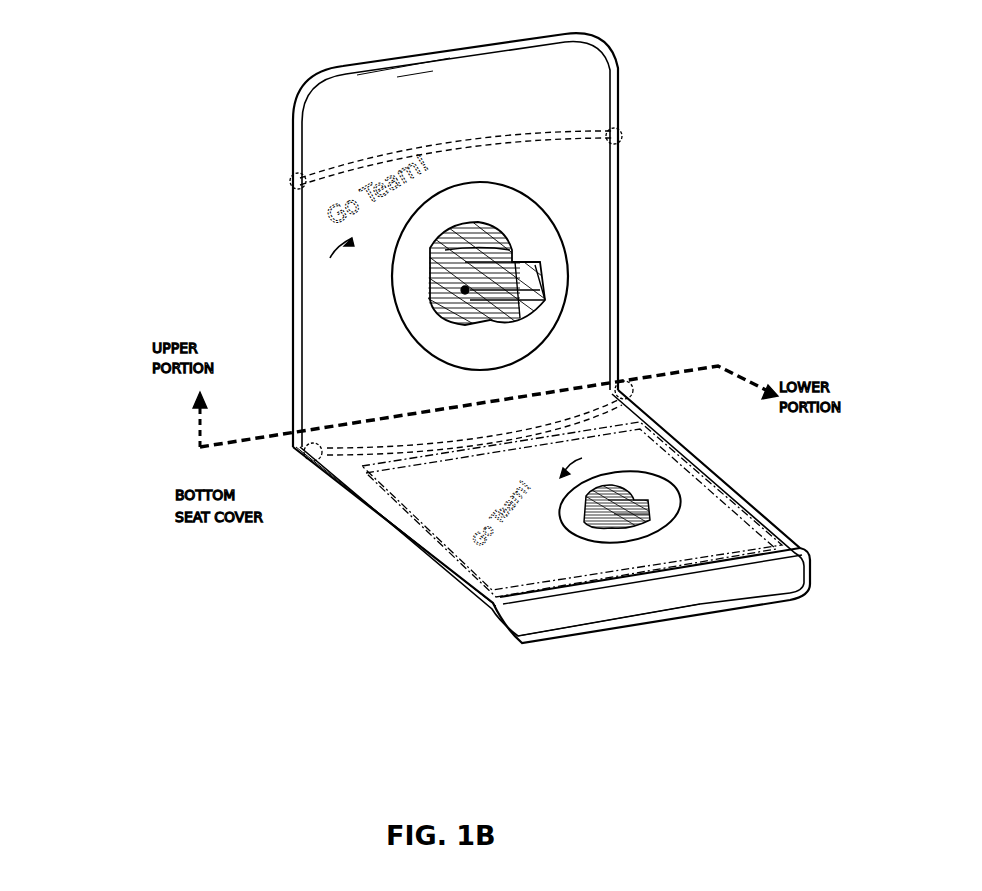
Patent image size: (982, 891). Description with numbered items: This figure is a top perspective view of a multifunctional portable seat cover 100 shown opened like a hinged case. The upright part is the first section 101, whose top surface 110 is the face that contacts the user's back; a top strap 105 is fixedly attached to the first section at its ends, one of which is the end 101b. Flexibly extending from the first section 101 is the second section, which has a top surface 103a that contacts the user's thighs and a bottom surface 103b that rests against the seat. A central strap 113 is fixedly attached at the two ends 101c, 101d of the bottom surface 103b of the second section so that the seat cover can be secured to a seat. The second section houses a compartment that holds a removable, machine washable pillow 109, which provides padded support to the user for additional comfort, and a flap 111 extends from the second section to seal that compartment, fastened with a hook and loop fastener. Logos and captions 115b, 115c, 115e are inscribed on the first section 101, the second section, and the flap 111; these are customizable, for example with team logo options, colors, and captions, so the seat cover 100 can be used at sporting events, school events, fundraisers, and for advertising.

The multifunctional portable seat cover 100 is at (130, 132).
The first section 101 is at (618, 52).
The end of the first section 101b is at (622, 140).
The end of the bottom surface of the second section 101c is at (634, 394).
The end of the bottom surface of the second section 101d is at (306, 452).
The top surface of the second section 103a is at (718, 522).
The bottom surface of the second section 103b is at (486, 596).
The top strap 105 is at (508, 136).
The pillow 109 is at (396, 508).
The top surface of the first section 110 is at (325, 140).
The flap 111 is at (780, 588).
The central strap 113 is at (483, 445).
The logo and caption 115b is at (392, 290).
The logo and caption 115c is at (630, 612).
The logo and caption 115e is at (632, 478).